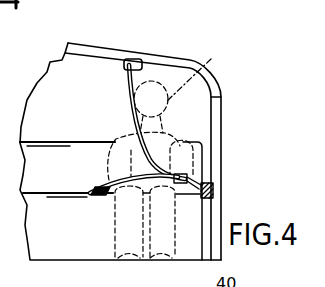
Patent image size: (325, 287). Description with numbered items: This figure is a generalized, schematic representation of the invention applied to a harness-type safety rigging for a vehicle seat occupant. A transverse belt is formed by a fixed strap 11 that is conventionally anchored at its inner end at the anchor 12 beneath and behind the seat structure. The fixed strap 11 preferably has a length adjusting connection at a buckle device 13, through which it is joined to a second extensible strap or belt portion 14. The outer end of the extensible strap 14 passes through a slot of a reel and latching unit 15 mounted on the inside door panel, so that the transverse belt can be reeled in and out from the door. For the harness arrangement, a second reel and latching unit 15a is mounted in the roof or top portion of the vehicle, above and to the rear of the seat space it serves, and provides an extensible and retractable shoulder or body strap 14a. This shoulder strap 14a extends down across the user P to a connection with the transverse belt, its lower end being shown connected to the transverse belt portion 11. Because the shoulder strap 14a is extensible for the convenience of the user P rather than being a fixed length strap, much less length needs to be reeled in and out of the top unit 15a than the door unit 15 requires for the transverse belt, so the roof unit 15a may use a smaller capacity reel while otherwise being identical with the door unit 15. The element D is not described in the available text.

The fixed strap 11 is at (113, 183).
The anchor 12 is at (98, 191).
The buckle device 13 is at (181, 141).
The extensible strap 14 is at (186, 181).
The shoulder strap 14a is at (127, 90).
The reel and latching unit 15 is at (214, 192).
The second reel and latching unit 15a is at (132, 59).
The anchor plate D is at (222, 190).
The user P is at (190, 72).